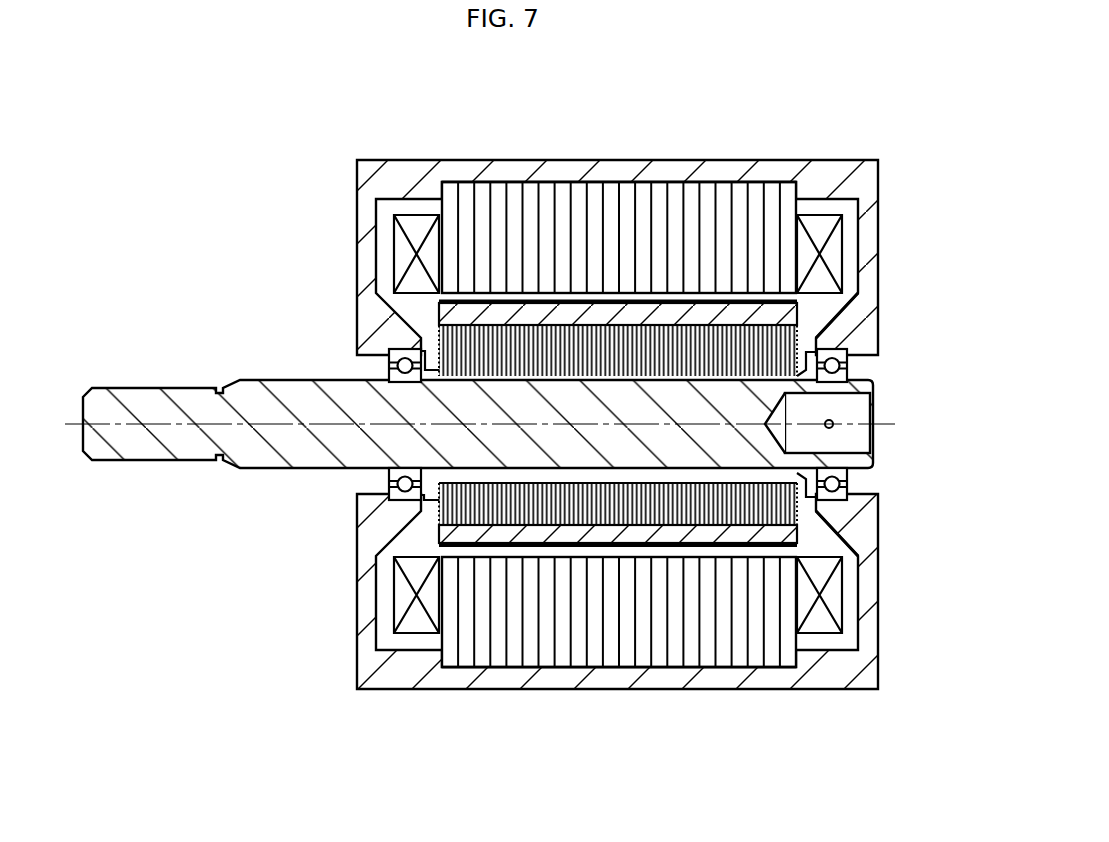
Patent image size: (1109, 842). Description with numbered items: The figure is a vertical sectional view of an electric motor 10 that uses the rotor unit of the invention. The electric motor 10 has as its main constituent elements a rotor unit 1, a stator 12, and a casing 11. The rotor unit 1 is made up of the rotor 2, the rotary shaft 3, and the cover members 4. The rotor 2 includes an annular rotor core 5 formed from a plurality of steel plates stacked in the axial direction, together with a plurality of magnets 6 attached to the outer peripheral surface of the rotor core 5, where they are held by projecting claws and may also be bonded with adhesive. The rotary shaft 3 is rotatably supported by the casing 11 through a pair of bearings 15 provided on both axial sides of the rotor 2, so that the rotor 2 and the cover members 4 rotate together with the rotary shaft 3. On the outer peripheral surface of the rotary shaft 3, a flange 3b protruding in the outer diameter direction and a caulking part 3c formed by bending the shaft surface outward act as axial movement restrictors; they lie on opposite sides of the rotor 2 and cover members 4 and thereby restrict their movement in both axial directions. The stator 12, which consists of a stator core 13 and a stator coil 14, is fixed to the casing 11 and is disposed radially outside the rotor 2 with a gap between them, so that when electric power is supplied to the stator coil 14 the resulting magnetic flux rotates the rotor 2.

The electric motor 10 is at (360, 136).
The casing 11 is at (514, 178).
The stator 12 is at (743, 178).
The stator core 13 is at (626, 205).
The stator coil 14 is at (833, 253).
The rotor unit 1 is at (434, 310).
The rotor 2 is at (798, 332).
The rotary shaft 3 is at (180, 385).
The flange 3b is at (431, 501).
The caulking part 3c is at (838, 484).
The cover members 4 is at (533, 552).
The rotor core 5 is at (780, 512).
The magnets 6 is at (770, 540).
The bearings 15 is at (396, 365).